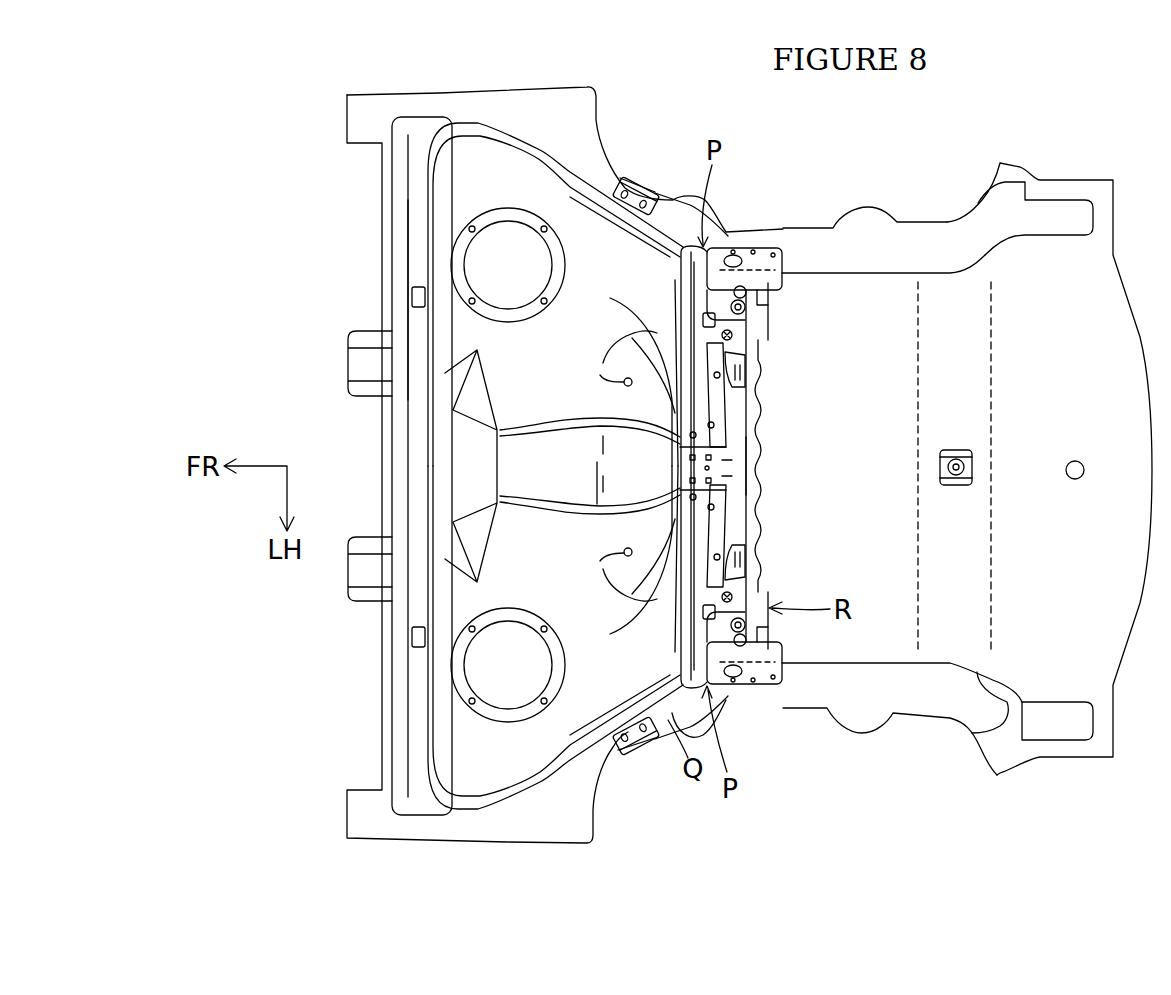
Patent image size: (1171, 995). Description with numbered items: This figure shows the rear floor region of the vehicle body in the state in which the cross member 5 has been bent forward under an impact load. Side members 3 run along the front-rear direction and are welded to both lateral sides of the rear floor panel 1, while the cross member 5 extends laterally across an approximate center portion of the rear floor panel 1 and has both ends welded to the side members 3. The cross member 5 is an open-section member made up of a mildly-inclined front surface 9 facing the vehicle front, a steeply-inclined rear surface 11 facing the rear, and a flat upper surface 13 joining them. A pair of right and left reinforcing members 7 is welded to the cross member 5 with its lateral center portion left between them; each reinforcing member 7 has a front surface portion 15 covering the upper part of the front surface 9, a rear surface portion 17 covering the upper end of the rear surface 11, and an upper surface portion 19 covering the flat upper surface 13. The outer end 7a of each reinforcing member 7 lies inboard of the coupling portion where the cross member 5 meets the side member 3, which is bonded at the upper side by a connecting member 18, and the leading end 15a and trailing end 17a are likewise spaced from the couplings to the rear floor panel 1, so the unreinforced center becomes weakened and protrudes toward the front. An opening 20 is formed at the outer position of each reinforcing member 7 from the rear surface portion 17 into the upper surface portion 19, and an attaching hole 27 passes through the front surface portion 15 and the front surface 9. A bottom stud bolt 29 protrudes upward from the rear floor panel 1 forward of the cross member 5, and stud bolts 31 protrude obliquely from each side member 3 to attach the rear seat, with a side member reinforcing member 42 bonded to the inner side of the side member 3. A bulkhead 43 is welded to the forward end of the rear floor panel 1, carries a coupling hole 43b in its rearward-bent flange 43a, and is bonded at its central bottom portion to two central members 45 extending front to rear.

The rear floor panel 1 is at (880, 288).
The side member 3 is at (824, 240).
The cross member 5 is at (781, 342).
The reinforcing member 7 is at (716, 400).
The outer end 7a is at (725, 322).
The mildly-inclined front surface 9 is at (686, 463).
The steeply-inclined rear surface 11 is at (749, 437).
The flat upper surface 13 is at (686, 474).
The front surface portion 15 is at (672, 365).
The leading end 15a is at (657, 334).
The rear surface portion 17 is at (745, 421).
The trailing end 17a is at (722, 470).
The connecting member 18 is at (762, 255).
The upper surface portion 19 is at (746, 405).
The opening 20 is at (745, 363).
The attaching hole 27 is at (665, 425).
The bottom stud bolt 29 is at (600, 375).
The stud bolt 31 is at (646, 187).
The side member reinforcing member 42 is at (652, 190).
The bulkhead 43 is at (370, 632).
The flange 43a is at (418, 335).
The coupling hole 43b is at (413, 290).
The central member 45 is at (347, 549).